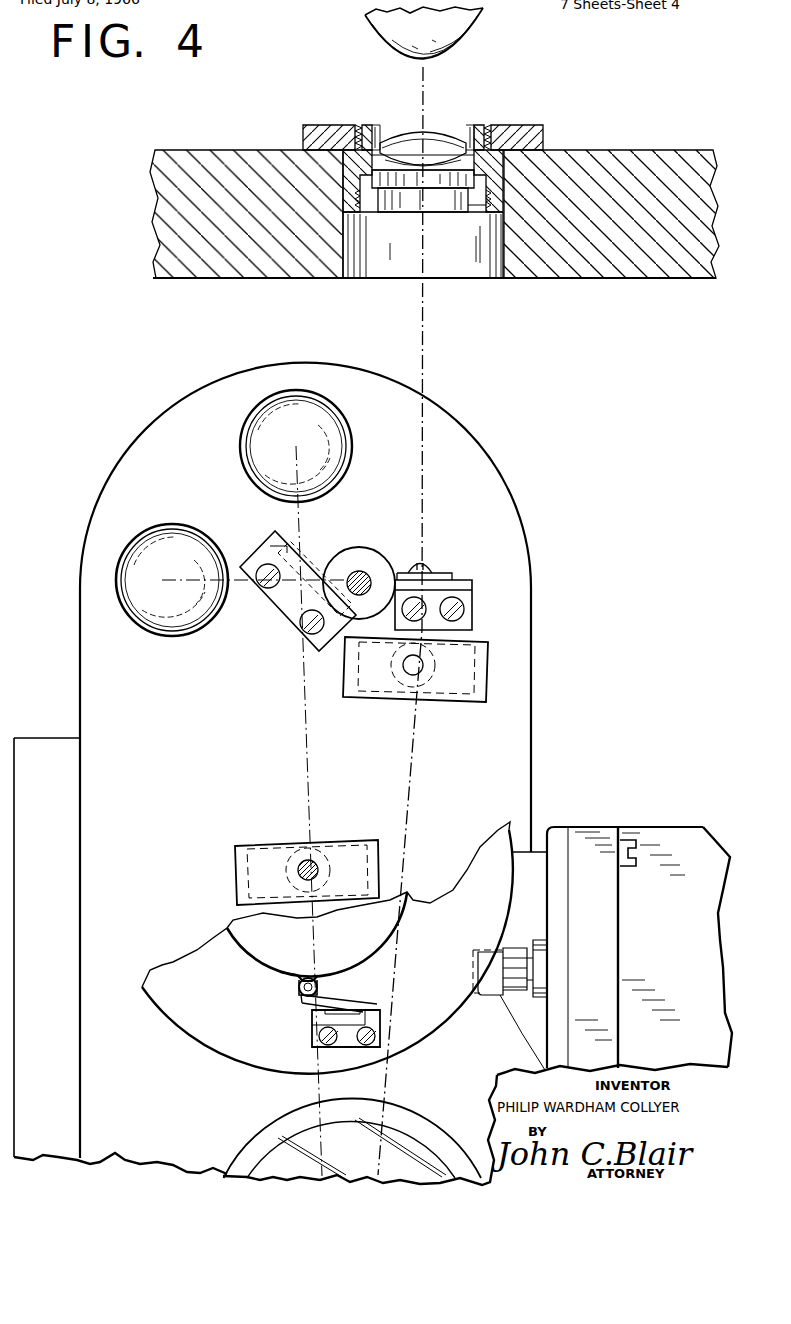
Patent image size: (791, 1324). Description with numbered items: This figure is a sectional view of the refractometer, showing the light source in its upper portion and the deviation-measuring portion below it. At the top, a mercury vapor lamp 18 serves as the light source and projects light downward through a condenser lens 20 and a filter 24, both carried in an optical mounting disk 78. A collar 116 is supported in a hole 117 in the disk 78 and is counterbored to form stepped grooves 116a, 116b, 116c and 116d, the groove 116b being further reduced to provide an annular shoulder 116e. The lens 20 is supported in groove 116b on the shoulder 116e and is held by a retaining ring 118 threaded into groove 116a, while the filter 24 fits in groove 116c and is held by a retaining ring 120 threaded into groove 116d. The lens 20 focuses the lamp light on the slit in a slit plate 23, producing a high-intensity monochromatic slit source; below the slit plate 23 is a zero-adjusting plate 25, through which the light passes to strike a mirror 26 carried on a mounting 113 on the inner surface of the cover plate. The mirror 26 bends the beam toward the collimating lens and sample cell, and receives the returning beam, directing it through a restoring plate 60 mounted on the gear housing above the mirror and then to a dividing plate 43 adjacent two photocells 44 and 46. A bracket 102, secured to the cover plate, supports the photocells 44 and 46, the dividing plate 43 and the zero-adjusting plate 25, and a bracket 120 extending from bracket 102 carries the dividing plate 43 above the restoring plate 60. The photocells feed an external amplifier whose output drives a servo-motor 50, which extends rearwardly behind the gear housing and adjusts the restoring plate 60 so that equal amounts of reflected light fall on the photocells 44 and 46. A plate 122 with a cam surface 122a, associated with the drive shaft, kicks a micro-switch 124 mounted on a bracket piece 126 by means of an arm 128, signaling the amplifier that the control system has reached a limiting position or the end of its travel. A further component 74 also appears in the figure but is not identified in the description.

The mercury vapor lamp 18 is at (458, 37).
The condenser lens 20 is at (426, 143).
The filter 24 is at (414, 180).
The optical mounting disk 78 is at (597, 270).
The collar 116 is at (417, 169).
The groove 116a is at (359, 128).
The groove 116b is at (380, 155).
The groove 116c is at (370, 179).
The groove 116d is at (362, 206).
The annular shoulder 116e is at (518, 142).
The hole 117 is at (503, 250).
The retaining ring 118 is at (472, 131).
The retaining ring 120 is at (481, 205).
The bracket 102 is at (196, 404).
The photocell 44 is at (323, 407).
The photocell 46 is at (190, 544).
The dividing plate 43 is at (300, 560).
The shaft bushing 74 is at (363, 572).
The slit plate 23 is at (455, 581).
The zero-adjusting plate 25 is at (463, 675).
The restoring plate 60 is at (346, 856).
The servo-motor 50 is at (592, 835).
The plate 122 is at (302, 955).
The cam surface 122a is at (292, 973).
The arm 128 is at (343, 998).
The bracket piece 126 is at (343, 1035).
The micro-switch 124 is at (320, 1021).
The mounting 113 is at (412, 1113).
The mirror 26 is at (417, 1148).